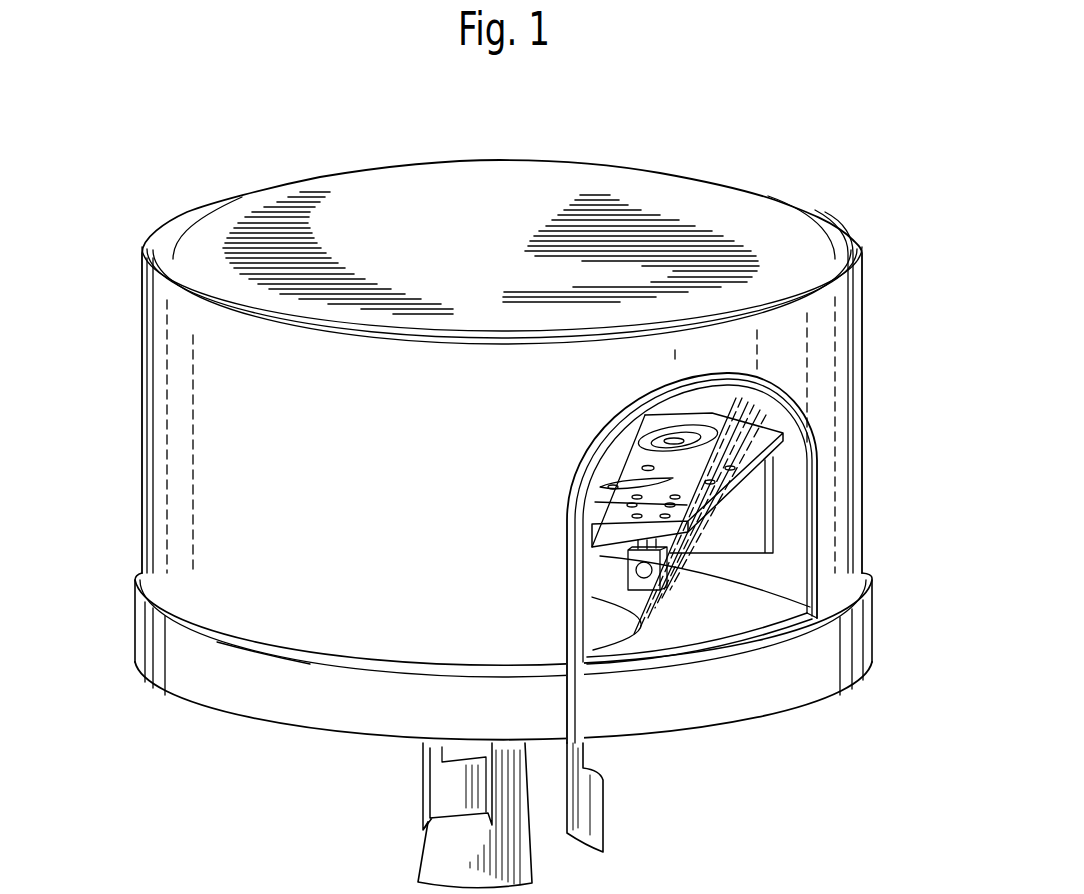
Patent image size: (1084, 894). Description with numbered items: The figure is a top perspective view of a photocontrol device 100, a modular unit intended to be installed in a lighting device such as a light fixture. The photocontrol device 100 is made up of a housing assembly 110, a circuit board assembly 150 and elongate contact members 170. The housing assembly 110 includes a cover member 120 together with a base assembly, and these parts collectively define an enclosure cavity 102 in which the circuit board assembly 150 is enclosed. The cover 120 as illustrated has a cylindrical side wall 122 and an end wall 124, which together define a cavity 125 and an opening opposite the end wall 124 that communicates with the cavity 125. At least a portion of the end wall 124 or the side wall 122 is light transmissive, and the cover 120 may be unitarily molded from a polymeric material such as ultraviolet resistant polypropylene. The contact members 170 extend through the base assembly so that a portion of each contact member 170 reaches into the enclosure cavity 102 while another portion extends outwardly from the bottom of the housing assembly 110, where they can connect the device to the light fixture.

The photocontrol device 100 is at (679, 150).
The housing assembly 110 is at (132, 379).
The cover member 120 is at (129, 281).
The cylindrical side wall 122 is at (197, 443).
The end wall 124 is at (348, 197).
The cavity 125 is at (702, 615).
The enclosure cavity 102 is at (748, 598).
The circuit board assembly 150 is at (738, 525).
The elongate contact members 170 is at (457, 843).